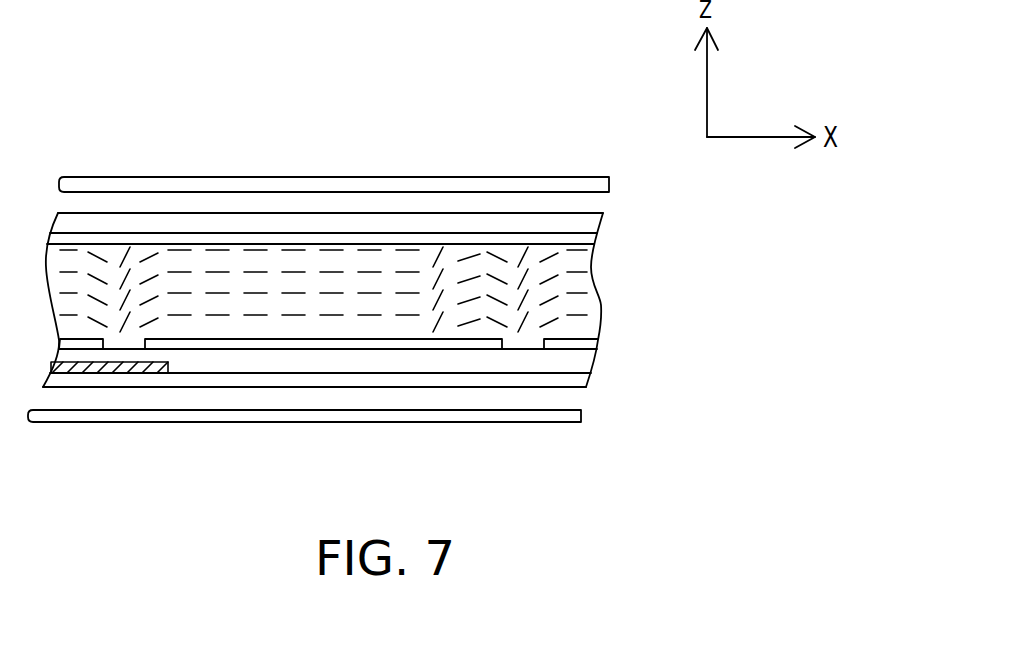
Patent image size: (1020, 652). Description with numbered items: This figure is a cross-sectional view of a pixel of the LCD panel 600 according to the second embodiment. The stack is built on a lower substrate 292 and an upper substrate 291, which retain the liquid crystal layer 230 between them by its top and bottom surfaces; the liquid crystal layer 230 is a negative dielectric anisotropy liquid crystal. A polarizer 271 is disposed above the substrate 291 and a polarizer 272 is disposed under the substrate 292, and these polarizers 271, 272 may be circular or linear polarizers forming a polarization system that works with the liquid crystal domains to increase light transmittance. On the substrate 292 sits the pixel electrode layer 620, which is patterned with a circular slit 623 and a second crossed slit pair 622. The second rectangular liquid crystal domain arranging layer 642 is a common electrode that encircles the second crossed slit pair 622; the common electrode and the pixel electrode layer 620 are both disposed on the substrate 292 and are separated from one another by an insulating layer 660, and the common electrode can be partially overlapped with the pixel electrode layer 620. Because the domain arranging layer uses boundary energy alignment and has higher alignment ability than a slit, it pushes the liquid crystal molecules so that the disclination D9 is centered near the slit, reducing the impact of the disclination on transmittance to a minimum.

The LCD panel 600 is at (84, 106).
The polarizer 271 is at (609, 184).
The substrate 291 is at (603, 218).
The liquid crystal layer 230 is at (591, 267).
The disclination D9 is at (433, 248).
The pixel electrode layer 620 is at (598, 342).
The insulating layer 660 is at (597, 355).
The substrate 292 is at (593, 379).
The polarizer 272 is at (581, 415).
The second rectangular liquid crystal domain arranging layer 642 is at (103, 373).
The circular slit 623 is at (126, 358).
The second crossed slit pair 622 is at (524, 347).